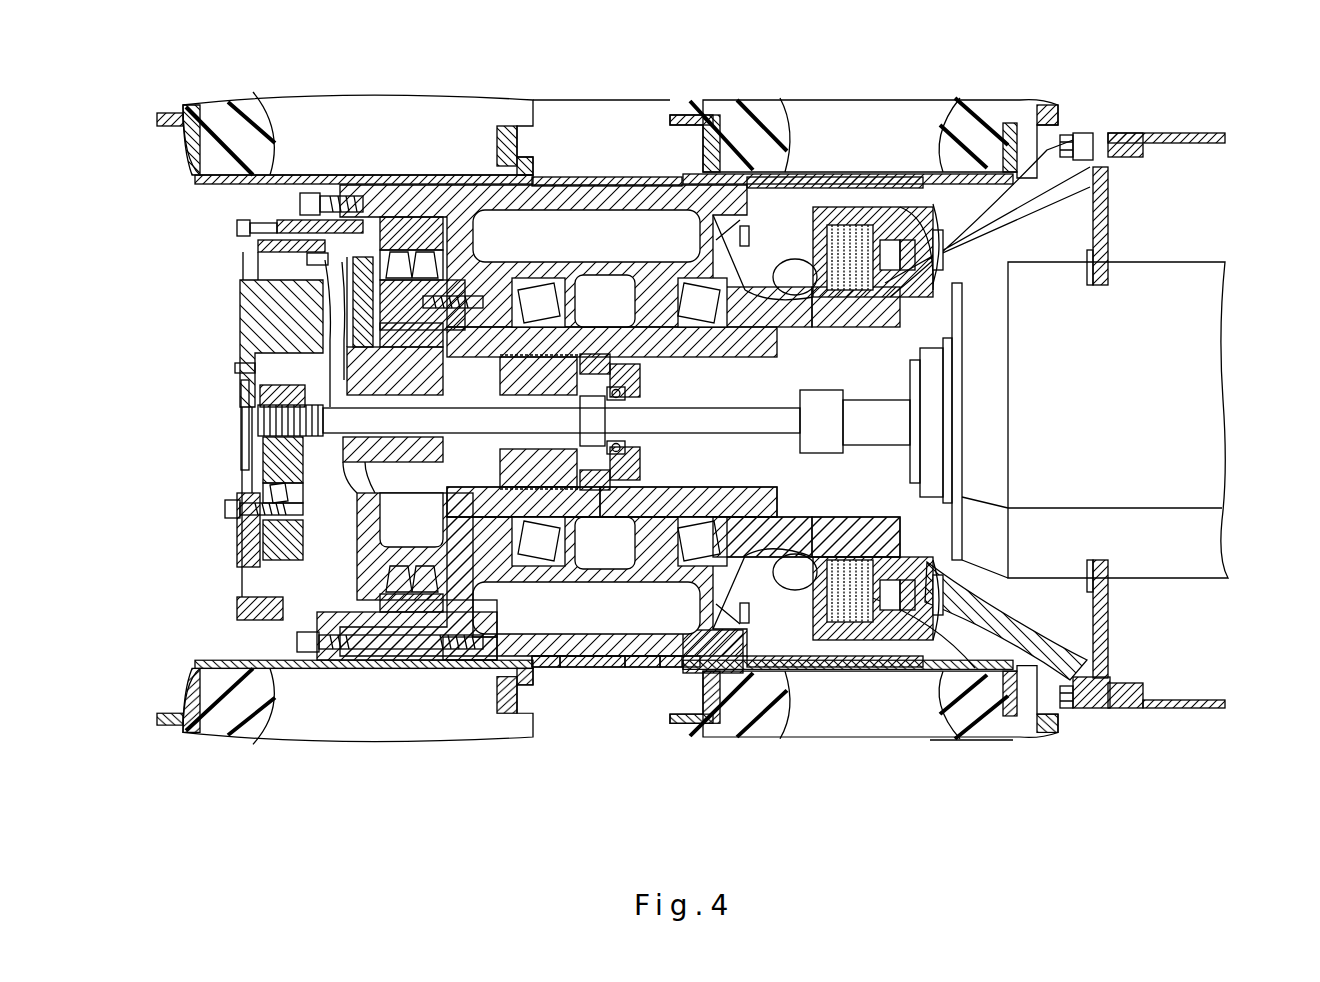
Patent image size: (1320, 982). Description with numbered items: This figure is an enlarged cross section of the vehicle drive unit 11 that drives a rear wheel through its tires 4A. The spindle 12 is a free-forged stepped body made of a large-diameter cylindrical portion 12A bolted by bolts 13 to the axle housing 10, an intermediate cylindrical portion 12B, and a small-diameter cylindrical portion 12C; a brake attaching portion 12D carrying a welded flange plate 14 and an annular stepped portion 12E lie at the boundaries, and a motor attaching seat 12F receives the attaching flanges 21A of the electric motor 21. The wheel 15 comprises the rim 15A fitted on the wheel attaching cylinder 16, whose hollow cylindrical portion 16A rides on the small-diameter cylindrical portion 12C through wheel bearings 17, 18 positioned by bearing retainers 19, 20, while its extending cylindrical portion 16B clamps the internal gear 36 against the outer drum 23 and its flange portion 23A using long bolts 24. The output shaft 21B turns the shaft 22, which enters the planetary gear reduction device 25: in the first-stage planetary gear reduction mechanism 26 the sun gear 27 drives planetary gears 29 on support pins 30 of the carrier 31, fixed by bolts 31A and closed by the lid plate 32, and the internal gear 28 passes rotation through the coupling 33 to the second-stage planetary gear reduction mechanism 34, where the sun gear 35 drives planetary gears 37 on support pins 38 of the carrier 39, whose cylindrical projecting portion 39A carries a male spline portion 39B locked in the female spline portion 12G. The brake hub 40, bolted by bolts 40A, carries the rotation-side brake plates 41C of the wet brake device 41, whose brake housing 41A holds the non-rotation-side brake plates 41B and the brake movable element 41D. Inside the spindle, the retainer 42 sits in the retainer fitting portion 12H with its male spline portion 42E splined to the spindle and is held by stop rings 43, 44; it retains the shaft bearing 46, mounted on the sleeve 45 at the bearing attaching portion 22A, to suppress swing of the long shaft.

The tire 4A is at (243, 725).
The axle housing 10 is at (1212, 133).
The vehicle drive unit 11 is at (617, 150).
The spindle 12 is at (975, 215).
The large-diameter cylindrical portion 12A is at (1012, 220).
The intermediate cylindrical portion 12B is at (825, 310).
The small-diameter cylindrical portion 12C is at (537, 343).
The brake attaching portion 12D is at (900, 215).
The annular stepped portion 12E is at (760, 300).
The motor attaching seat 12F is at (1100, 690).
The female spline portion 12G is at (630, 357).
The retainer fitting portion 12H is at (638, 360).
The bolt 13 is at (1064, 133).
The flange plate 14 is at (998, 742).
The wheel 15 is at (580, 672).
The rim 15A is at (637, 178).
The wheel attaching cylinder 16 is at (633, 667).
The hollow cylindrical portion 16A is at (600, 667).
The extending cylindrical portion 16B is at (493, 637).
The wheel bearing 17 is at (675, 667).
The wheel bearing 18 is at (548, 667).
The bearing retainer 19 is at (750, 523).
The bearing retainer 20 is at (487, 537).
The electric motor 21 is at (1150, 408).
The attaching flange 21A is at (1120, 213).
The output shaft 21B is at (822, 435).
The shaft 22 is at (408, 433).
The bearing attaching portion 22A is at (607, 420).
The outer drum 23 is at (283, 227).
The flange portion 23A is at (393, 297).
The long bolt 24 is at (390, 650).
The planetary gear reduction device 25 is at (330, 605).
The first-stage planetary gear reduction mechanism 26 is at (245, 560).
The sun gear 27 is at (268, 397).
The internal gear 28 is at (260, 250).
The planetary gear 29 is at (280, 465).
The support pin 30 is at (225, 509).
The carrier 31 is at (257, 320).
The bolt 31A is at (235, 610).
The lid plate 32 is at (240, 428).
The coupling 33 is at (393, 297).
The second-stage planetary gear reduction mechanism 34 is at (335, 312).
The sun gear 35 is at (340, 390).
The internal gear 36 is at (415, 660).
The planetary gear 37 is at (410, 285).
The support pin 38 is at (355, 300).
The carrier 39 is at (370, 612).
The cylindrical projecting portion 39A is at (580, 517).
The male spline portion 39B is at (563, 347).
The brake hub 40 is at (757, 640).
The bolt 40A is at (749, 236).
The wet brake device 41 is at (850, 652).
The brake housing 41A is at (948, 640).
The non-rotation-side brake plate 41B is at (843, 230).
The rotation-side brake plate 41C is at (875, 245).
The brake movable element 41D is at (907, 640).
The retainer 42 is at (628, 517).
The male spline portion 42E is at (597, 353).
The stop ring 43 is at (613, 473).
The stop ring 44 is at (557, 466).
The sleeve 45 is at (626, 447).
The shaft bearing 46 is at (633, 467).